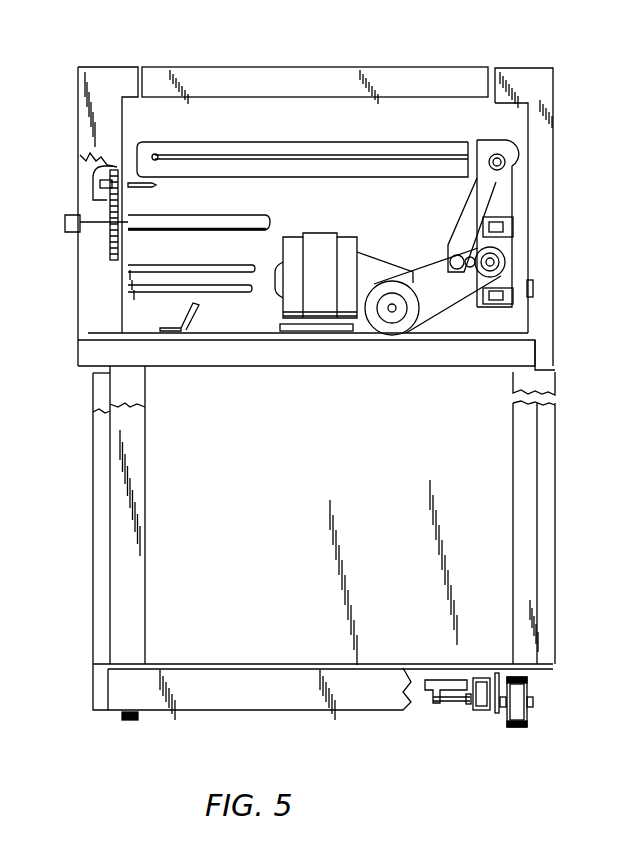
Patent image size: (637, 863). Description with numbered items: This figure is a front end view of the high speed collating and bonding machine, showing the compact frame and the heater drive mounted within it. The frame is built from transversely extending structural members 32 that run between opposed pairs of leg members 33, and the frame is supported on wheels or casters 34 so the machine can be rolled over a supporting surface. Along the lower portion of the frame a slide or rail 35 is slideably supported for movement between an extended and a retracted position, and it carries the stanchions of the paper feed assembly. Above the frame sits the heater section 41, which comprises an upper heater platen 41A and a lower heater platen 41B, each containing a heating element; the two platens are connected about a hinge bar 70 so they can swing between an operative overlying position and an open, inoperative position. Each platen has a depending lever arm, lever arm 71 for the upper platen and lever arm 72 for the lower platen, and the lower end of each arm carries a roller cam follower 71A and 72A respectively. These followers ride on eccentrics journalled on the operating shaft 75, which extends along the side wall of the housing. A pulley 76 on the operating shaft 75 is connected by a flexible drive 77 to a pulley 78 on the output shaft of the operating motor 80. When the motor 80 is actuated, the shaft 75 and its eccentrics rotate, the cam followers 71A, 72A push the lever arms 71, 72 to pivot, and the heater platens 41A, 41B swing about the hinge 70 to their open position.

The heater section 41 is at (400, 57).
The upper heater platen 41A is at (349, 153).
The lower heater platen 41B is at (318, 170).
The hinge bar 70 is at (503, 160).
The lever arm portion 71 is at (497, 190).
The roller cam follower 71A is at (470, 268).
The lever arm portion 72 is at (465, 212).
The roller cam follower 72A is at (456, 257).
The operating shaft 75 is at (505, 263).
The pulley 76 is at (478, 254).
The drive belt 77 is at (425, 306).
The pulley 78 is at (396, 320).
The operating motor 80 is at (378, 318).
The structural member 32 is at (98, 353).
The leg member 33 is at (530, 535).
The caster 34 is at (528, 718).
The slide 35 is at (472, 710).